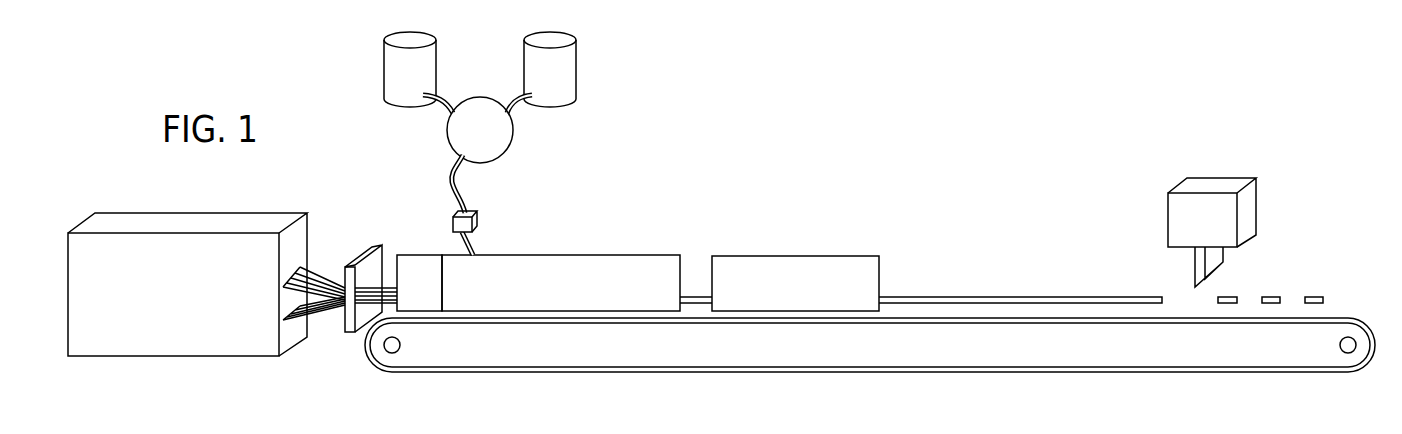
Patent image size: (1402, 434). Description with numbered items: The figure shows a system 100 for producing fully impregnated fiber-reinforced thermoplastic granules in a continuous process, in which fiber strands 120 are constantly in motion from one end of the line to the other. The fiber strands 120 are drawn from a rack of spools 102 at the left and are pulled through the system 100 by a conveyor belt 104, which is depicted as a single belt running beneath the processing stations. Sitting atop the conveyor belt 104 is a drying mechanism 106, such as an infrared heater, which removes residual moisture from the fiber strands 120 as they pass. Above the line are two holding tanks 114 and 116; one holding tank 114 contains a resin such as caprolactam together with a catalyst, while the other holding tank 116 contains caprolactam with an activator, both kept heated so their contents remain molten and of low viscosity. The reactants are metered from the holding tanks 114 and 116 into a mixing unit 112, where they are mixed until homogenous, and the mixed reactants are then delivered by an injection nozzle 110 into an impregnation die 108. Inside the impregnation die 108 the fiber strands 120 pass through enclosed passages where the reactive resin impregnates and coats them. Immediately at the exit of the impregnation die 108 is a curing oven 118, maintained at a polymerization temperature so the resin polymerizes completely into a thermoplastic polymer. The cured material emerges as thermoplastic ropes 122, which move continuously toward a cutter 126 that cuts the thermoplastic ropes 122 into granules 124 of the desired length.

The system 100 is at (765, 137).
The rack of spools 102 is at (185, 291).
The conveyor belt 104 is at (378, 366).
The drying mechanism 106 is at (407, 287).
The impregnation die 108 is at (559, 287).
The injection nozzle 110 is at (473, 243).
The mixing unit 112 is at (490, 158).
The holding tank 114 is at (392, 70).
The holding tank 116 is at (565, 77).
The curing oven 118 is at (778, 289).
The fiber strands 120 is at (317, 273).
The thermoplastic ropes 122 is at (1013, 295).
The granules 124 is at (1313, 295).
The cutter 126 is at (1213, 183).